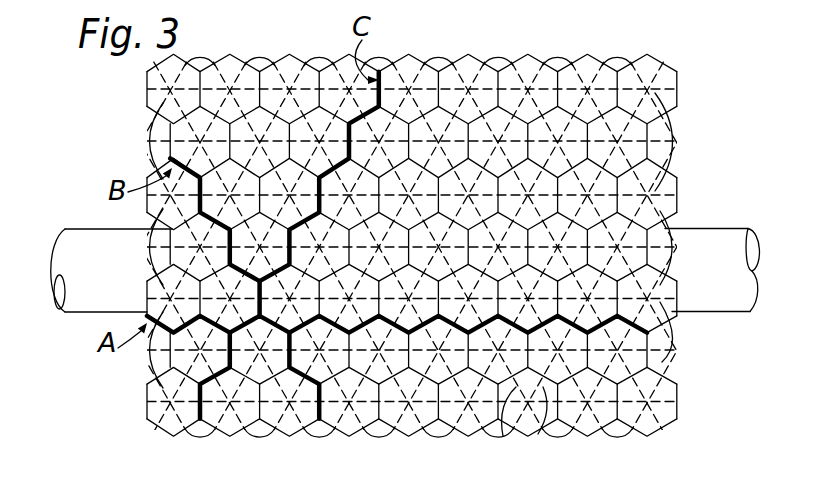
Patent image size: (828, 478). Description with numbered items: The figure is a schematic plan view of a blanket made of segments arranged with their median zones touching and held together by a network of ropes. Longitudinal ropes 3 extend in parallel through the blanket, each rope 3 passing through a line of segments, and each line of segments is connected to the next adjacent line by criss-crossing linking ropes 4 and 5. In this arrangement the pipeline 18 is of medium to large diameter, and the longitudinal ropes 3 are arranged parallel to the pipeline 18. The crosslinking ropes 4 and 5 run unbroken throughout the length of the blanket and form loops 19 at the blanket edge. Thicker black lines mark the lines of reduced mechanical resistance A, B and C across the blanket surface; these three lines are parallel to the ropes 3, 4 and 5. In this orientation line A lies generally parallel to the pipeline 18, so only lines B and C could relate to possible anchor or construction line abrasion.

The longitudinal ropes 3 is at (670, 141).
The linking rope 4 is at (362, 424).
The linking rope 5 is at (294, 416).
The pipeline 18 is at (75, 247).
The loops 19 is at (441, 56).